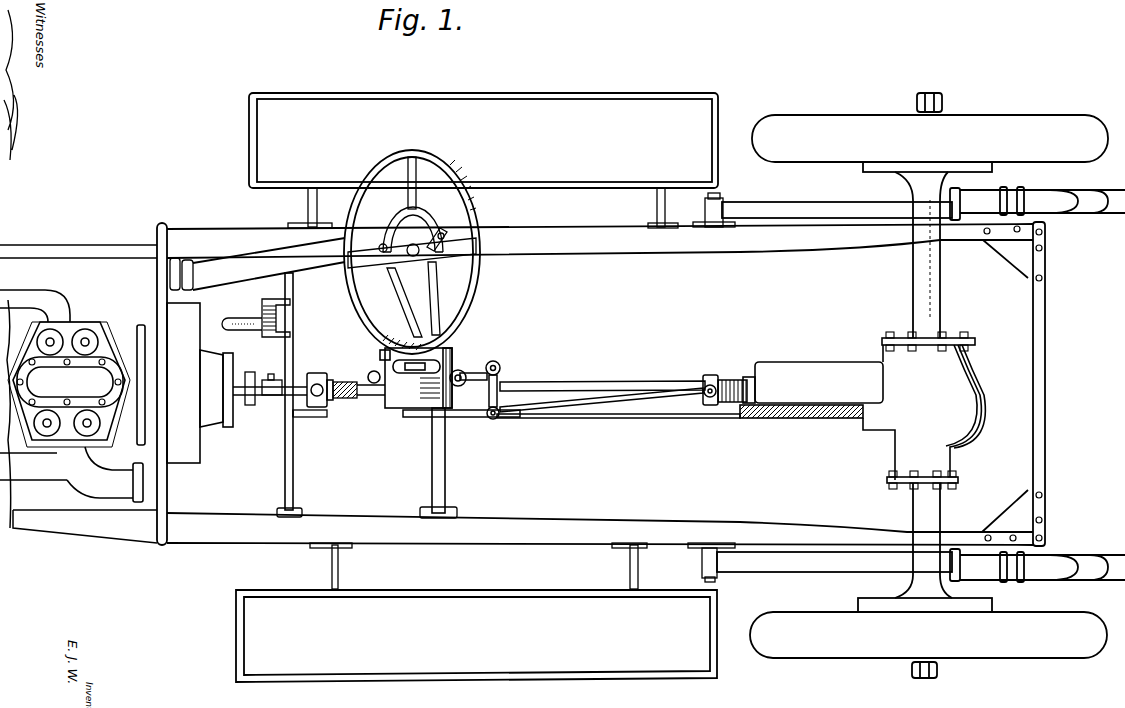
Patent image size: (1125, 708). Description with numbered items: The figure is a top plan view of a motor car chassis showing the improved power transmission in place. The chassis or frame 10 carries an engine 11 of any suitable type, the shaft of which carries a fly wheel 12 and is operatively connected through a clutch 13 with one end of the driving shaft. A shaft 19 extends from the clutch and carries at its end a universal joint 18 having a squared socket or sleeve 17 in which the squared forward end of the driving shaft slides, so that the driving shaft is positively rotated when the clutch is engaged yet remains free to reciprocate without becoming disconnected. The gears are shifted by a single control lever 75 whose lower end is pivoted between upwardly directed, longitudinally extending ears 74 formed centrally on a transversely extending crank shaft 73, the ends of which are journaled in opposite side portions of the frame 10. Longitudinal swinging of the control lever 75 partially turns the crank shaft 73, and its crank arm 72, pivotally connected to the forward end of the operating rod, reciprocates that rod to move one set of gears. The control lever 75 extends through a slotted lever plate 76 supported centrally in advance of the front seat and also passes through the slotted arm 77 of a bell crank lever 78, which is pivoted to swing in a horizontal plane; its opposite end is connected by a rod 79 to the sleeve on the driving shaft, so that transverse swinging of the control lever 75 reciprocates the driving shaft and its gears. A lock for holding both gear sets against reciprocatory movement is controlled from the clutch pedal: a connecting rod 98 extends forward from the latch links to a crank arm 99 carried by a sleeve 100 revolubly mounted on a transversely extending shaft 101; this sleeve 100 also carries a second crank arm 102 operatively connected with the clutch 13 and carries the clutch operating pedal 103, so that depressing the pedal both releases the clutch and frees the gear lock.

The chassis or frame 10 is at (558, 521).
The engine 11 is at (137, 345).
The fly wheel 12 is at (193, 462).
The clutch 13 is at (235, 405).
The squared socket or sleeve 17 is at (360, 399).
The universal joint 18 is at (332, 398).
The shaft 19 is at (258, 384).
The crank arm 72 is at (458, 416).
The crank shaft 73 is at (446, 450).
The ears 74 is at (600, 385).
The control lever 75 is at (413, 372).
The slotted lever plate 76 is at (975, 368).
The slotted arm 77 is at (697, 418).
The bell crank lever 78 is at (470, 368).
The rod 79 is at (695, 382).
The connecting rod 98 is at (620, 405).
The crank arm 99 is at (345, 413).
The sleeve 100 is at (283, 432).
The shaft 101 is at (293, 468).
The second crank arm 102 is at (300, 390).
The clutch operating pedal 103 is at (251, 322).